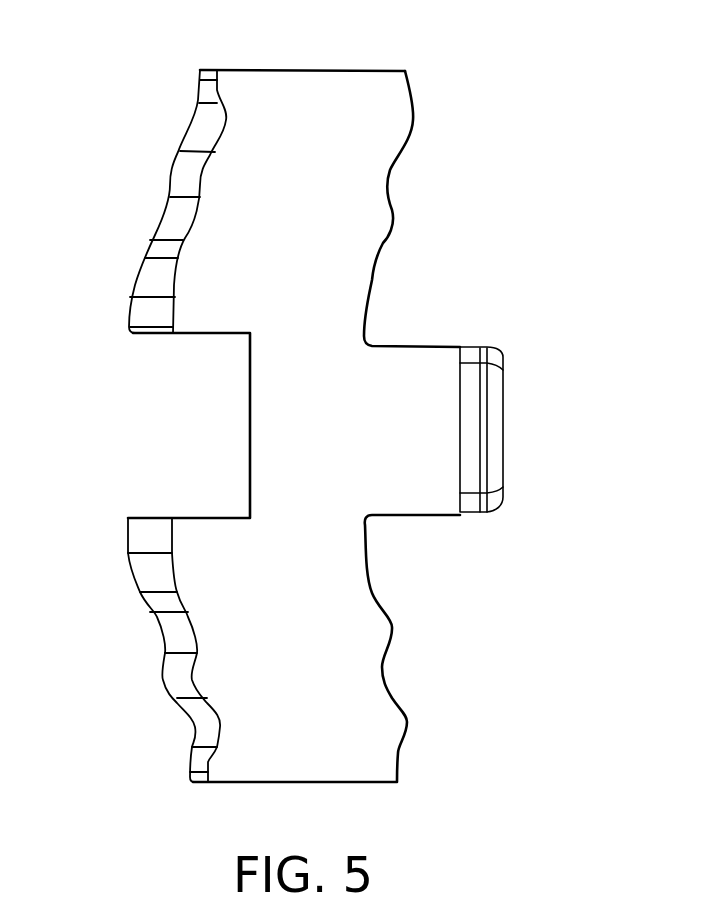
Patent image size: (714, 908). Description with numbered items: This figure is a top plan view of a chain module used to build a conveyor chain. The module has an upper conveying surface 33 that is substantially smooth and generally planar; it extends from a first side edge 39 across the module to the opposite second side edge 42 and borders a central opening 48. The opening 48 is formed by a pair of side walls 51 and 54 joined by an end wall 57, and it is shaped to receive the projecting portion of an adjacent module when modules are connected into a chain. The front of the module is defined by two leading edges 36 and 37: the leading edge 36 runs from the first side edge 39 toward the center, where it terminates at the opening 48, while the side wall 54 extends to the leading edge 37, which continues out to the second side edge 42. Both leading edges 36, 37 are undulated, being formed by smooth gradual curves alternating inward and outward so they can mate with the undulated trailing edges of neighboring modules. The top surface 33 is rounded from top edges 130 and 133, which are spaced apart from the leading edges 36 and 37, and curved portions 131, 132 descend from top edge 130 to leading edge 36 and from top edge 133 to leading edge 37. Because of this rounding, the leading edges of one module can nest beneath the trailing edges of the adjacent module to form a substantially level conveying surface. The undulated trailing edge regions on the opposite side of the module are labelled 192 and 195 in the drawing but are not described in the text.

The upper conveying surface 33 is at (342, 425).
The second side edge 42 is at (293, 70).
The first side edge 39 is at (274, 782).
The upper side wall 195 is at (392, 198).
The lower side wall 192 is at (390, 688).
The end wall 57 is at (247, 396).
The side wall 54 is at (195, 333).
The side wall 51 is at (200, 518).
The opening 48 is at (193, 410).
The top edge 133 is at (207, 215).
The top edge 130 is at (195, 675).
The curved portion 131 is at (185, 173).
The curved portion 132 is at (165, 597).
The leading edge 37 is at (162, 174).
The leading edge 36 is at (160, 673).